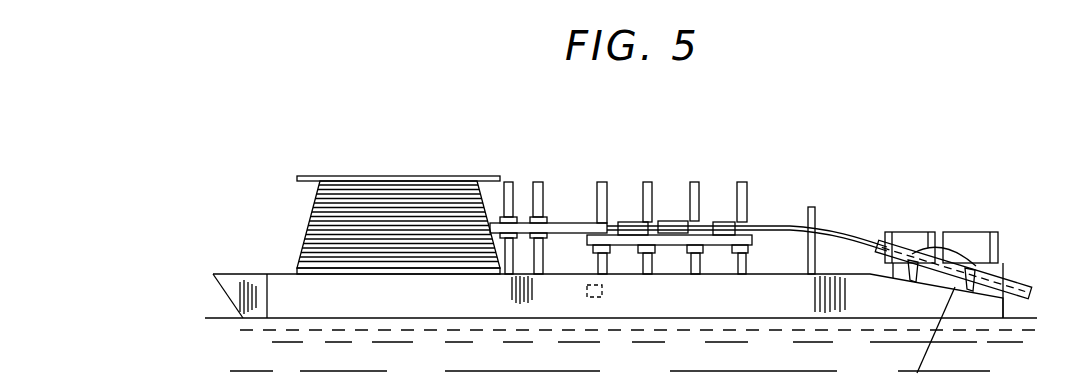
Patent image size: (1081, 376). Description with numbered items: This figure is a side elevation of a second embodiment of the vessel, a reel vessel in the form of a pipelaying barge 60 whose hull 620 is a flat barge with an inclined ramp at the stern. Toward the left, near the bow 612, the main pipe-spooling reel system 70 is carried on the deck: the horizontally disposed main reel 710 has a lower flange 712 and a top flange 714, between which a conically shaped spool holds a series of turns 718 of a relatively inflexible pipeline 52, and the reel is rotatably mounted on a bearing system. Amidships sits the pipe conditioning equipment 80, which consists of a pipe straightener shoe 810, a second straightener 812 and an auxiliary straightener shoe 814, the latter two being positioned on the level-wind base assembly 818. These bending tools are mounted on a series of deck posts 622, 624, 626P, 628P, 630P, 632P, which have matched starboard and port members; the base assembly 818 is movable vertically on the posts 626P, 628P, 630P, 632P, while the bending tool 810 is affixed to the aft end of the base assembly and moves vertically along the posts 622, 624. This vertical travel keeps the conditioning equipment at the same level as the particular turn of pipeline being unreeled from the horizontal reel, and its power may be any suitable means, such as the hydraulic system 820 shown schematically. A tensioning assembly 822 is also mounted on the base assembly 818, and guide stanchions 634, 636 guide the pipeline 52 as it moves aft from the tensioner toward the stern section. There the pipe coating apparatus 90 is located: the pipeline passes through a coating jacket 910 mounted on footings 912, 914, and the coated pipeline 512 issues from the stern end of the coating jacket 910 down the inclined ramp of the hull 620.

The pipelaying barge 60 is at (208, 292).
The bow 612 is at (215, 274).
The hull 620 is at (608, 296).
The main pipe-spooling reel system 70 is at (400, 176).
The main reel 710 is at (306, 202).
The top flange 714 is at (297, 176).
The turns 718 is at (307, 228).
The lower flange 712 is at (297, 267).
The deck post 622 is at (507, 182).
The deck post 624 is at (537, 182).
The deck post 626P is at (603, 182).
The deck post 628P is at (647, 182).
The deck post 630P is at (696, 182).
The deck post 632P is at (790, 165).
The pipe conditioning equipment 80 is at (596, 148).
The second straightener 812 is at (625, 222).
The auxiliary straightener shoe 814 is at (683, 221).
The tensioning assembly 822 is at (722, 216).
The level-wind base assembly 818 is at (628, 246).
The hydraulic system 820 is at (592, 300).
The pipe straightener shoe 810 is at (578, 235).
The pipeline 52 is at (777, 228).
The guide stanchion 634 is at (815, 208).
The pipe coating apparatus 90 is at (947, 221).
The guide stanchion 636 is at (892, 232).
The coating jacket 910 is at (967, 260).
The coated pipeline 512 is at (1017, 280).
The footing 912 is at (948, 288).
The footing 914 is at (977, 293).